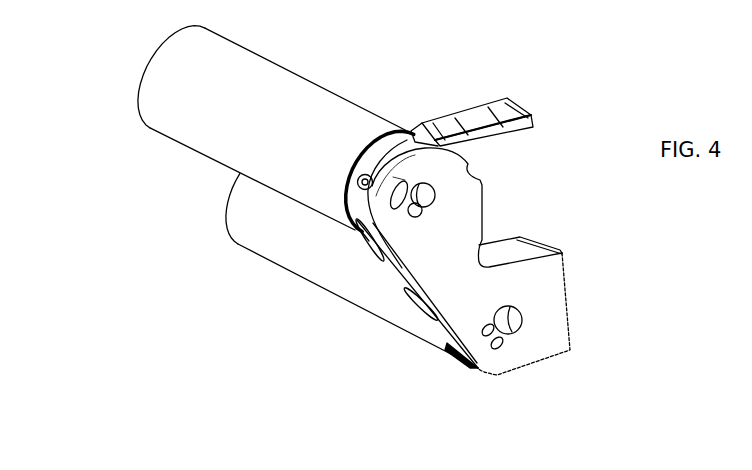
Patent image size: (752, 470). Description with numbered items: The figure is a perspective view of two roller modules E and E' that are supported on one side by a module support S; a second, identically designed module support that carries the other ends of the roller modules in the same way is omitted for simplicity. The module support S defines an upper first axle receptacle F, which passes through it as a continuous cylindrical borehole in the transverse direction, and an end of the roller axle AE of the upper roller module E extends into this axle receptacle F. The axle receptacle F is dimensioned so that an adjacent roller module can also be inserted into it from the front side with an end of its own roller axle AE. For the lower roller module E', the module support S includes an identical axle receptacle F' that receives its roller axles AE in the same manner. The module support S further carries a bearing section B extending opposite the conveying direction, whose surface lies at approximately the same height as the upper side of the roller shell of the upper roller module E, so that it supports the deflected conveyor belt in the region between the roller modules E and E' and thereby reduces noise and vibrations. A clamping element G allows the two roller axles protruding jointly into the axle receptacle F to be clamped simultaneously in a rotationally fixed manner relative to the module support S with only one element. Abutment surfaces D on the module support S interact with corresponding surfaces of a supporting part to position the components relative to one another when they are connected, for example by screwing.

The upper roller module E is at (232, 128).
The lower roller module E' is at (306, 271).
The bearing section B is at (467, 122).
The roller axle AE is at (413, 198).
The abutment surfaces D is at (483, 208).
The first axle receptacle F is at (412, 222).
The axle receptacle F' is at (529, 328).
The clamping element G is at (400, 186).
The module support S is at (432, 276).